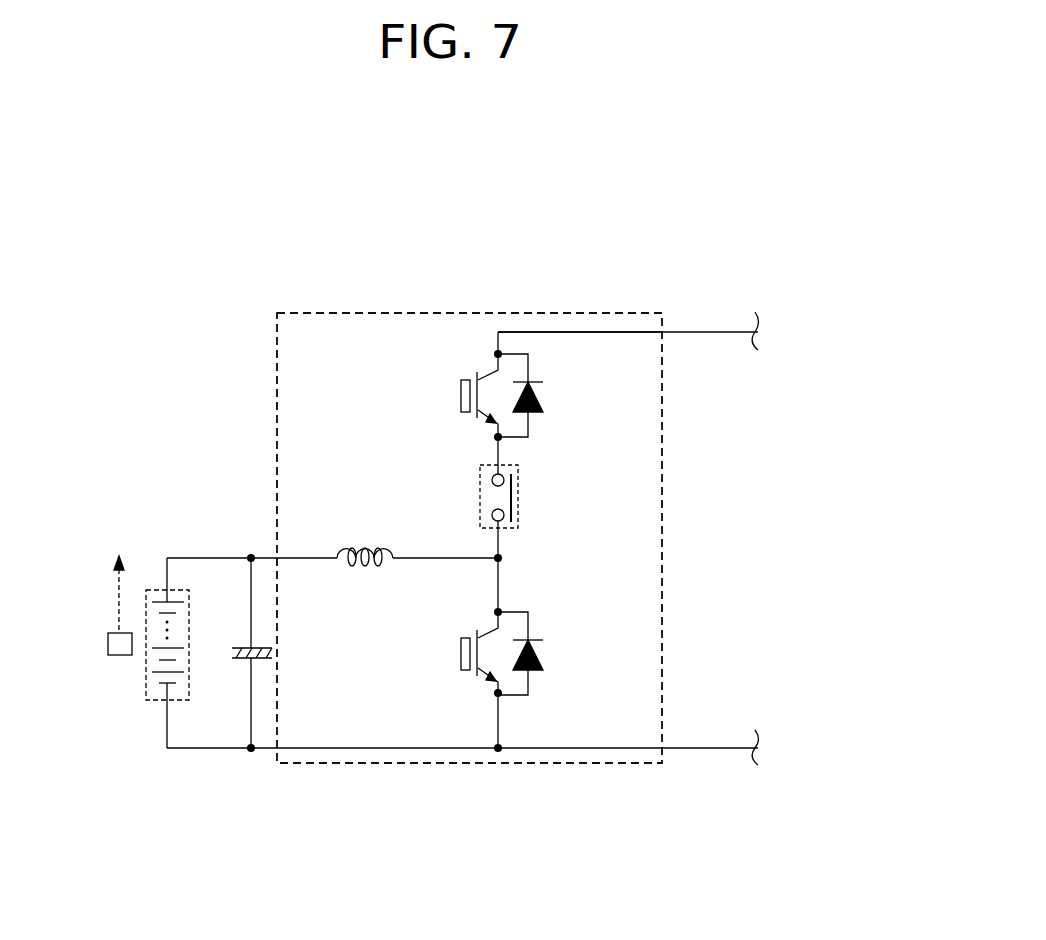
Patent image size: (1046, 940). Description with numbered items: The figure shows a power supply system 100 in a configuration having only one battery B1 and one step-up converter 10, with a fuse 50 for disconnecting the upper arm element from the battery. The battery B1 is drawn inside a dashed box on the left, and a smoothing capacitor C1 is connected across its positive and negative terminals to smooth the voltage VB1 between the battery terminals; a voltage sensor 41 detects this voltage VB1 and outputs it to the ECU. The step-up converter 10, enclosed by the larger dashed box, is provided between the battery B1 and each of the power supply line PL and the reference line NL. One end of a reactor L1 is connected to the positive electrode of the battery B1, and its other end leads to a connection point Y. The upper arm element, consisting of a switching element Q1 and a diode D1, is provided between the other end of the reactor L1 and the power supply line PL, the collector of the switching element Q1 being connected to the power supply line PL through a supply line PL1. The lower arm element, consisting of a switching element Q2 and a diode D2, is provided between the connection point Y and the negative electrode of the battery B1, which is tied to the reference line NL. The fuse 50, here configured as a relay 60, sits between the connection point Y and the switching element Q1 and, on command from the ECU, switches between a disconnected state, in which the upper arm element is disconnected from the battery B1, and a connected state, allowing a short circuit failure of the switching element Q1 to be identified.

The power supply system 100 is at (700, 226).
The step-up converter 10 is at (277, 352).
The fuse 50 is at (480, 494).
The relay 60 is at (518, 492).
The voltage sensor 41 is at (120, 655).
The switching element Q1 is at (461, 396).
The switching element Q2 is at (461, 654).
The diode D1 is at (536, 396).
The diode D2 is at (541, 653).
The reactor L1 is at (365, 571).
The smoothing capacitor C1 is at (236, 651).
The battery B1 is at (150, 700).
The voltage VB1 is at (95, 593).
The power supply line PL is at (718, 332).
The supply line PL1 is at (618, 332).
The reference line NL is at (728, 748).
The connection point Y is at (502, 558).